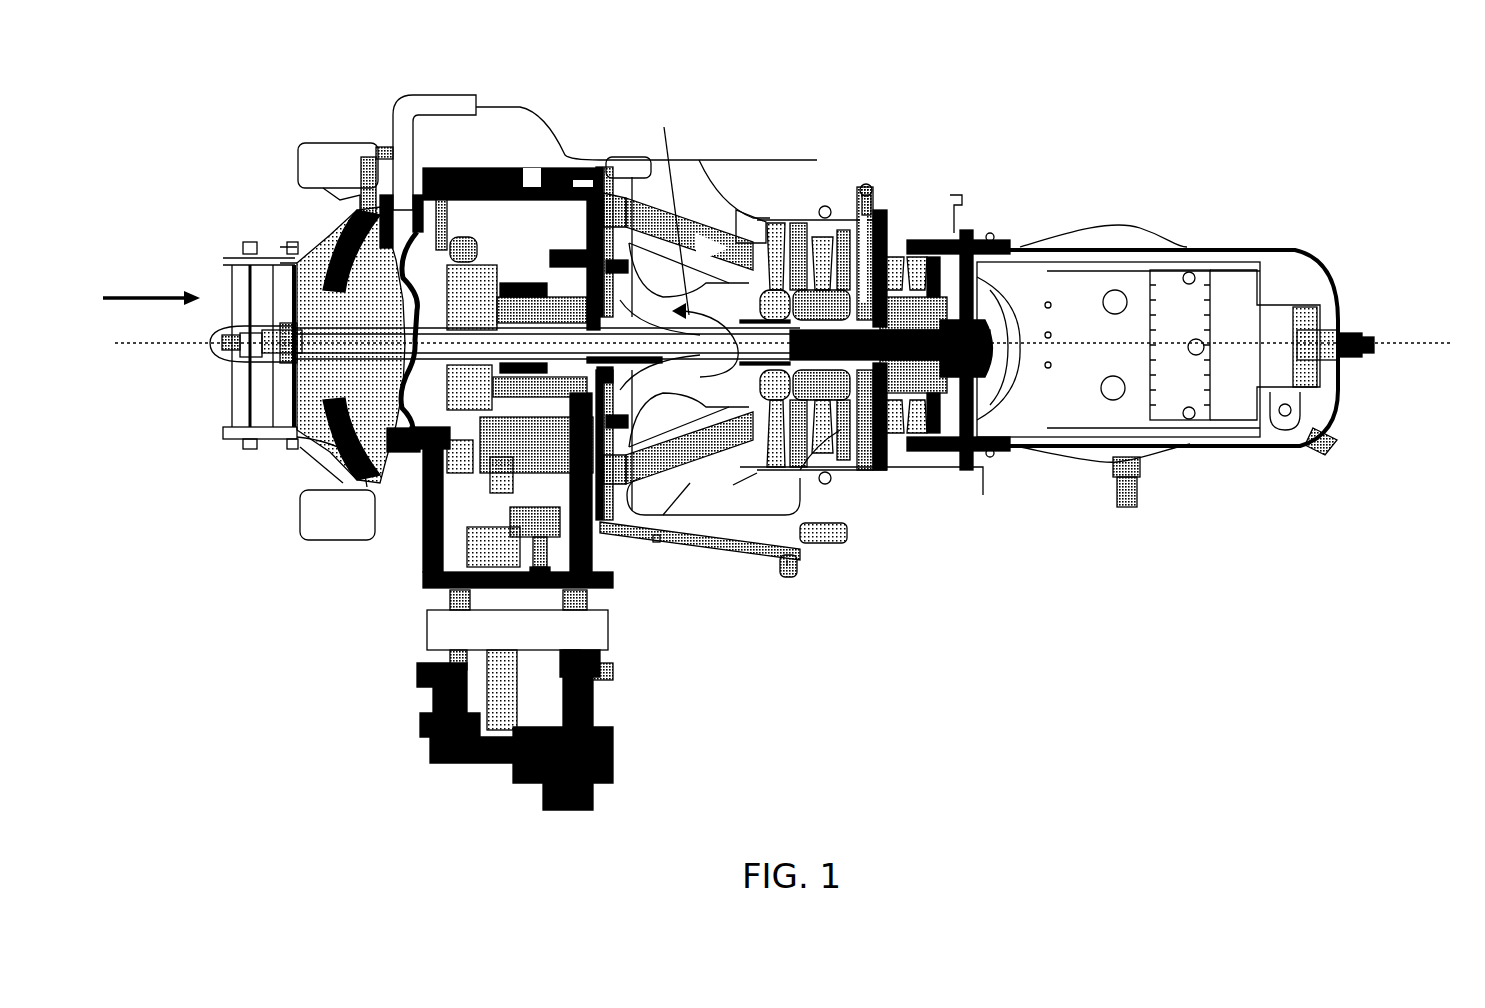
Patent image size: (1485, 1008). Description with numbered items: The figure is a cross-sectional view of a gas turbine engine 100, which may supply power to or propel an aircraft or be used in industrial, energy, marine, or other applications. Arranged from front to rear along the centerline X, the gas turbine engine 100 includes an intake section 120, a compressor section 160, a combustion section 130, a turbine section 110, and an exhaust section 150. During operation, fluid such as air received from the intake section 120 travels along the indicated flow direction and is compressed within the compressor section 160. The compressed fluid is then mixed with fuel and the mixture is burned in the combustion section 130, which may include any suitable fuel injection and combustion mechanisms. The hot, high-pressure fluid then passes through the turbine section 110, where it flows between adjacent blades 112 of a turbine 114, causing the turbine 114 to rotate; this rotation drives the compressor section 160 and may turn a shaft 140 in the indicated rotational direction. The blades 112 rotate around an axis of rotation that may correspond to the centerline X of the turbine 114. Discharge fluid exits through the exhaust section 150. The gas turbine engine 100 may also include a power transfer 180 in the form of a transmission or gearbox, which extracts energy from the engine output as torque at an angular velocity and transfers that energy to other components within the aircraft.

The gas turbine engine 100 is at (840, 658).
The turbine section 110 is at (851, 160).
The blades 112 is at (790, 205).
The turbine 114 is at (1028, 348).
The intake section 120 is at (192, 489).
The combustion section 130 is at (720, 122).
The shaft 140 is at (847, 467).
The exhaust section 150 is at (1355, 242).
The compressor section 160 is at (580, 124).
The power transfer 180 is at (340, 654).